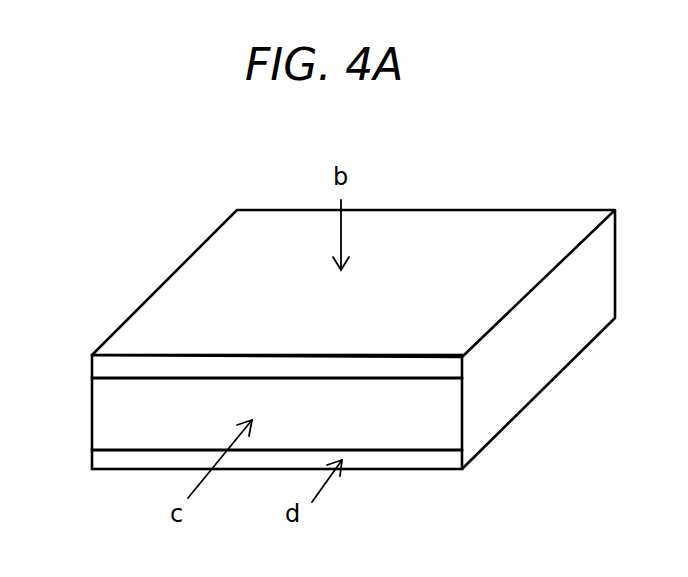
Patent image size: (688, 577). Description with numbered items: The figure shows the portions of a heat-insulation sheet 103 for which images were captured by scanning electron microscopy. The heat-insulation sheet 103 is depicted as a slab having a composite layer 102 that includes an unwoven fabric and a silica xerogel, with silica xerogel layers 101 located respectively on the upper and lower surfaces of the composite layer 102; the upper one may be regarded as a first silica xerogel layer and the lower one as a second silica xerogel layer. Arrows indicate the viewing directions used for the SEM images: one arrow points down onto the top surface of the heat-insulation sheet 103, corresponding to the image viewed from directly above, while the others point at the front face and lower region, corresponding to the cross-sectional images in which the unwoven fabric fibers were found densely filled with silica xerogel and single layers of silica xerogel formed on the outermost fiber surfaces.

The silica xerogel layer 101 is at (113, 372).
The composite layer 102 is at (450, 410).
The heat-insulation sheet 103 is at (179, 176).